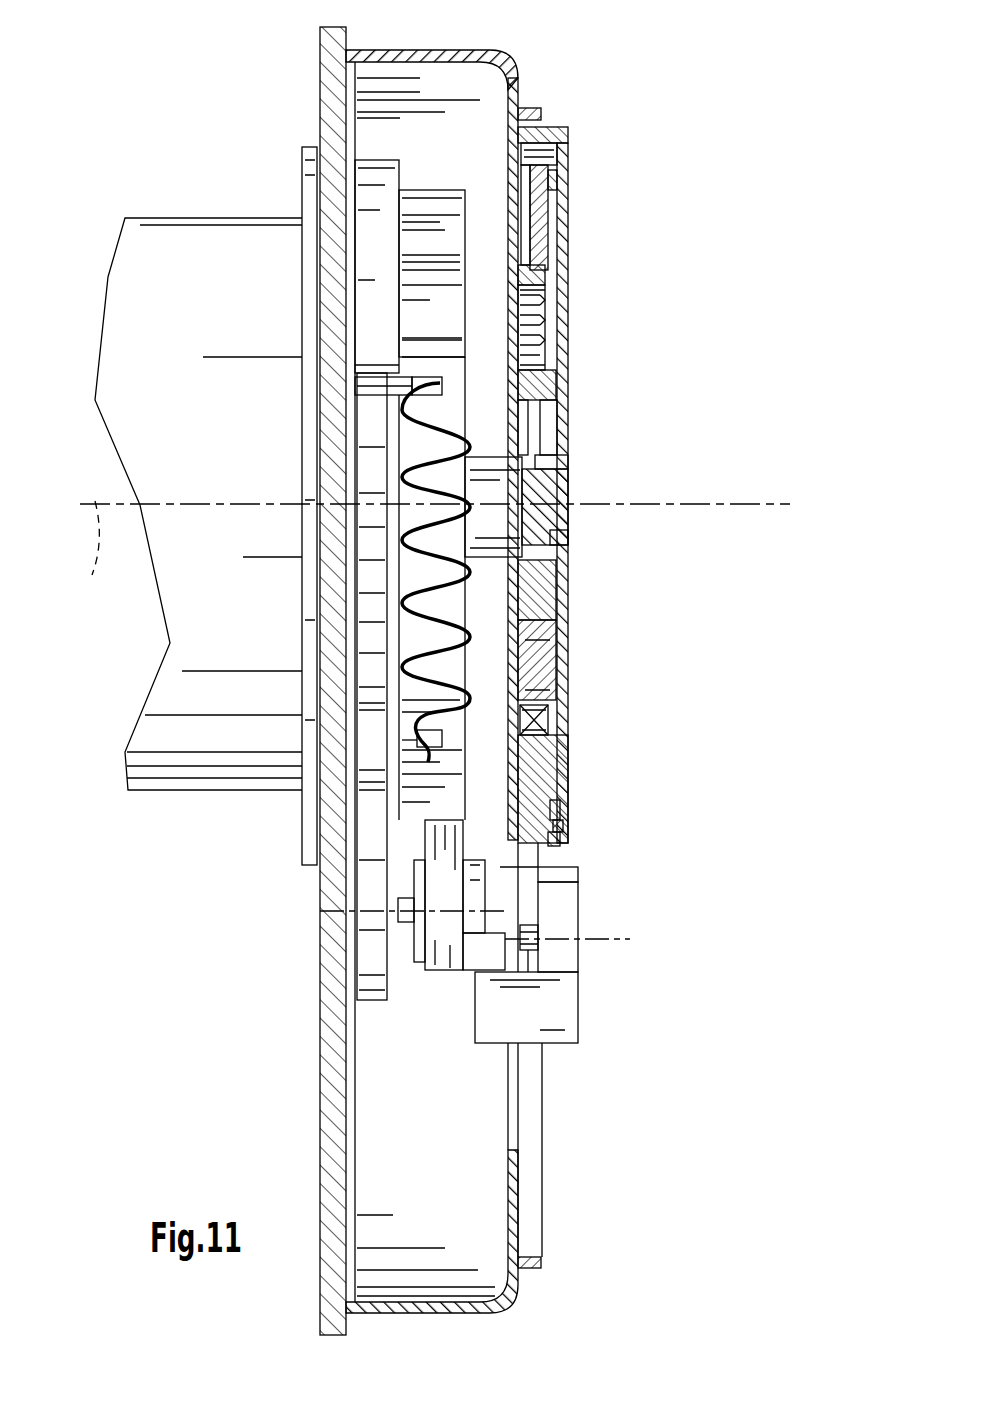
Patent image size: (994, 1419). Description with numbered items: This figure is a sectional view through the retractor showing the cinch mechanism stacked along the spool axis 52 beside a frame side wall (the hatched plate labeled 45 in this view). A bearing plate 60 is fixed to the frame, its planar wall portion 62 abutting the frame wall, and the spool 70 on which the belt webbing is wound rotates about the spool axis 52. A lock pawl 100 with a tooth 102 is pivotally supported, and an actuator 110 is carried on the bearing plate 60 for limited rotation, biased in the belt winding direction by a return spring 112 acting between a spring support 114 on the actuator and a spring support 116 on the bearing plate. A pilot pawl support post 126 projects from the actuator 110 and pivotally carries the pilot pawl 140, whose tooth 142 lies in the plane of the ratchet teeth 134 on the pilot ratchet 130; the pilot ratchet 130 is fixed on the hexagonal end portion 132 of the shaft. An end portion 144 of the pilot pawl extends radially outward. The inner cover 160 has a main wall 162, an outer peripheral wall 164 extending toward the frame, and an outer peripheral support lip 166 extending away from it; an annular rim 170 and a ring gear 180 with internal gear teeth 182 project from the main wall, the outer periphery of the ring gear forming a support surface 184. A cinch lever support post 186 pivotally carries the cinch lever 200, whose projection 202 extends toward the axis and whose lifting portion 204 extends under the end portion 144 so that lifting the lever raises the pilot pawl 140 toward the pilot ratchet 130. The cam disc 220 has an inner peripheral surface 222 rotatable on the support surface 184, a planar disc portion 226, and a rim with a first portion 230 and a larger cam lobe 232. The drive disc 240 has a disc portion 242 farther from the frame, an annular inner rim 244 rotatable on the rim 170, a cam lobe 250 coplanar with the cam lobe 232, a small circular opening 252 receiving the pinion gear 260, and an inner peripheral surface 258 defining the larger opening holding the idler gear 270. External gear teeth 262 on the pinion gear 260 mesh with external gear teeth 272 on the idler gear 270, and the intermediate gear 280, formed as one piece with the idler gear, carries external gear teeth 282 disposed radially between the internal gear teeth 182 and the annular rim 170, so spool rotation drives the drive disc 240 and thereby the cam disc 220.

The mounting plate 45 is at (320, 28).
The spool axis 52 is at (426, 549).
The bearing plate 60 is at (483, 656).
The planar wall portion 62 is at (357, 1195).
The spool 70 is at (165, 217).
The lock pawl 100 is at (368, 1005).
The tooth 102 is at (372, 758).
The actuator 110 is at (350, 190).
The return spring 112 is at (425, 692).
The spring support 114 is at (437, 746).
The spring support 116 is at (400, 382).
The pilot pawl support post 126 is at (400, 882).
The pilot ratchet 130 is at (430, 188).
The hexagonal end portion 132 is at (500, 522).
The ratchet teeth 134 is at (355, 295).
The pilot pawl 140 is at (405, 932).
The tooth 142 is at (432, 820).
The end portion 144 is at (475, 957).
The inner cover 160 is at (483, 656).
The main wall 162 is at (522, 80).
The outer peripheral wall 164 is at (460, 48).
The outer peripheral support lip 166 is at (545, 112).
The annular rim 170 is at (548, 400).
The ring gear 180 is at (550, 315).
The internal gear teeth 182 is at (540, 338).
The support surface 184 is at (543, 272).
The cinch lever support post 186 is at (528, 950).
The cinch lever 200 is at (582, 1000).
The projection 202 is at (548, 905).
The lifting portion 204 is at (560, 1045).
The cam disc 220 is at (552, 215).
The inner peripheral surface 222 is at (522, 290).
The planar disc portion 226 is at (525, 213).
The first portion 230 is at (545, 158).
The cam lobe 232 is at (560, 878).
The drive disc 240 is at (570, 182).
The disc portion 242 is at (568, 205).
The annular inner rim 244 is at (548, 370).
The cam lobe 250 is at (560, 135).
The small diameter circular opening 252 is at (557, 445).
The inner peripheral surface 258 is at (562, 835).
The pinion gear 260 is at (572, 495).
The external gear teeth 262 is at (568, 468).
The idler gear 270 is at (570, 757).
The external gear teeth 272 is at (560, 542).
The intermediate gear 280 is at (540, 685).
The external gear teeth 282 is at (545, 640).